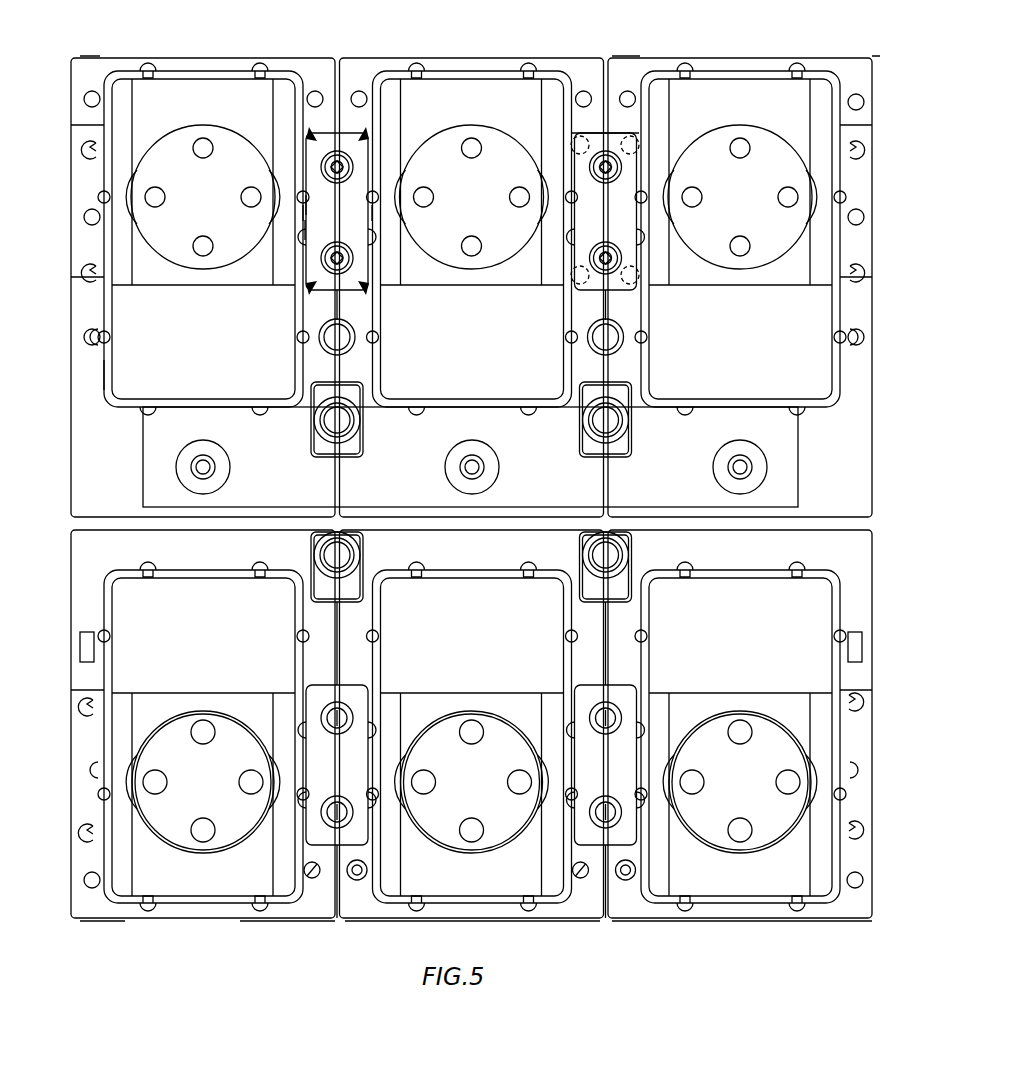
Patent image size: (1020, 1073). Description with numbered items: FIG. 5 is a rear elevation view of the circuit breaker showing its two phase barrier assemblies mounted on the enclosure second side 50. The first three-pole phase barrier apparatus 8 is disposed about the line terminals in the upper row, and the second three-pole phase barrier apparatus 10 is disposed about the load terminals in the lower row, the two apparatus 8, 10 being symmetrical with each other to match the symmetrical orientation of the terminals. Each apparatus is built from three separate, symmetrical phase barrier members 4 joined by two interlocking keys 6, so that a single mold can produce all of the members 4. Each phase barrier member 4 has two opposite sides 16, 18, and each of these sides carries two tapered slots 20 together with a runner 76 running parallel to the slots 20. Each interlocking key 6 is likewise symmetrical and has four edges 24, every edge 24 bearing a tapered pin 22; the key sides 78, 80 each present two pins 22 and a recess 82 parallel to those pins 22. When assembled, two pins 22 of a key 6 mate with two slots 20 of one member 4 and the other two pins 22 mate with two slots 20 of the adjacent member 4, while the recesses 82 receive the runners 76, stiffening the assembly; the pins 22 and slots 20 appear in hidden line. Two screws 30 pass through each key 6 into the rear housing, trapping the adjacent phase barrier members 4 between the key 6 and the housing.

The phase barrier member 4 is at (193, 70).
The interlocking key 6 is at (362, 163).
The first three-pole phase barrier apparatus 8 is at (850, 392).
The second three-pole phase barrier apparatus 10 is at (848, 580).
The side of phase barrier member 16 is at (100, 373).
The side of phase barrier member 18 is at (305, 225).
The slot 20 is at (357, 125).
The pin 22 is at (574, 142).
The edge 24 is at (625, 140).
The screw 30 is at (320, 166).
The second side of enclosure 50 is at (95, 472).
The runner 76 is at (98, 197).
The side of interlocking key 78 is at (303, 213).
The side of interlocking key 80 is at (373, 213).
The recess 82 is at (330, 207).